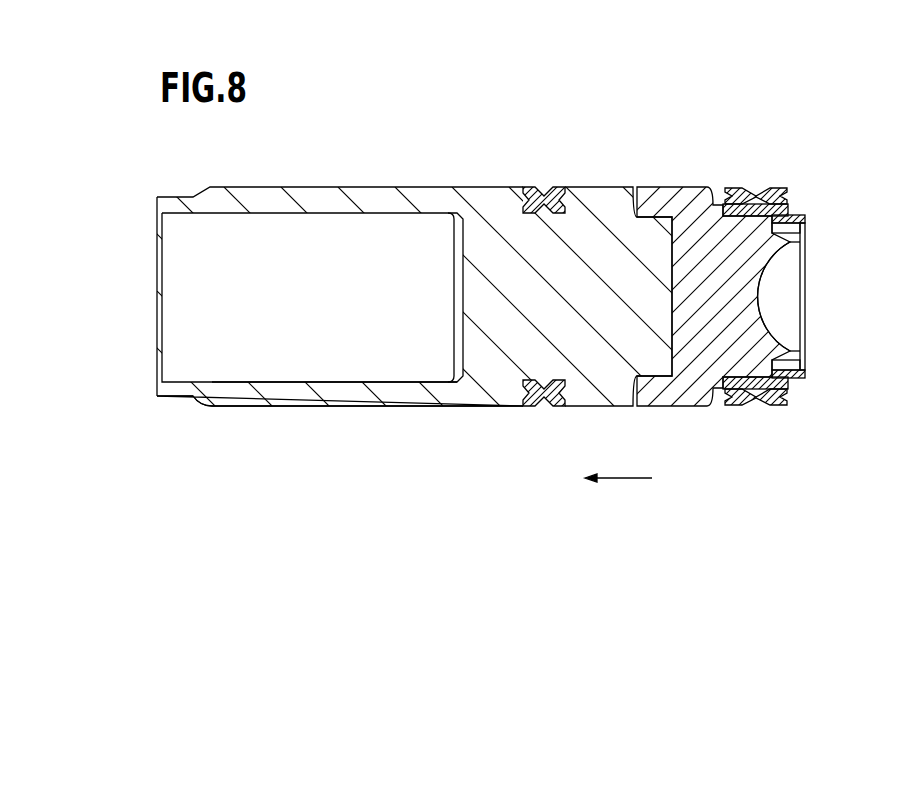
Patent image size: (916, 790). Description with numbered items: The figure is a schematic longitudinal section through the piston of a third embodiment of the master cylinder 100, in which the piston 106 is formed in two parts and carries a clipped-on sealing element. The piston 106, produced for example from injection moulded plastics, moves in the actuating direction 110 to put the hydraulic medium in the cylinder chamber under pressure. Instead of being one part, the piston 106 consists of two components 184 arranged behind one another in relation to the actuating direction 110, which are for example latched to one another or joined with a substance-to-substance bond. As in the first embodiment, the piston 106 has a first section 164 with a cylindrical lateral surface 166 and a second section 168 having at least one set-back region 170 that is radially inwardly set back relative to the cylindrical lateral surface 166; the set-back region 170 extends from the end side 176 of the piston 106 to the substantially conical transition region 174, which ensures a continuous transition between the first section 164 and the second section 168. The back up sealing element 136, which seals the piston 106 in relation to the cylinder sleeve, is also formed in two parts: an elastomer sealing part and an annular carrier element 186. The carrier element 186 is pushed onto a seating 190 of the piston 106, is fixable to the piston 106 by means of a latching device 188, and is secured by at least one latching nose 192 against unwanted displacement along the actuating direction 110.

The master cylinder 100 is at (531, 93).
The piston 106 is at (655, 115).
The actuating direction 110 is at (628, 477).
The back up sealing element 136 is at (558, 187).
The first section 164 is at (300, 393).
The cylindrical lateral surface 166 is at (377, 407).
The second section 168 is at (165, 397).
The set-back region 170 is at (182, 397).
The transition region 174 is at (195, 398).
The end side 176 is at (157, 393).
The components of the piston 184 is at (595, 220).
The carrier element 186 is at (790, 210).
The latching device 188 is at (815, 371).
The seating 190 is at (800, 240).
The latching nose 192 is at (800, 221).